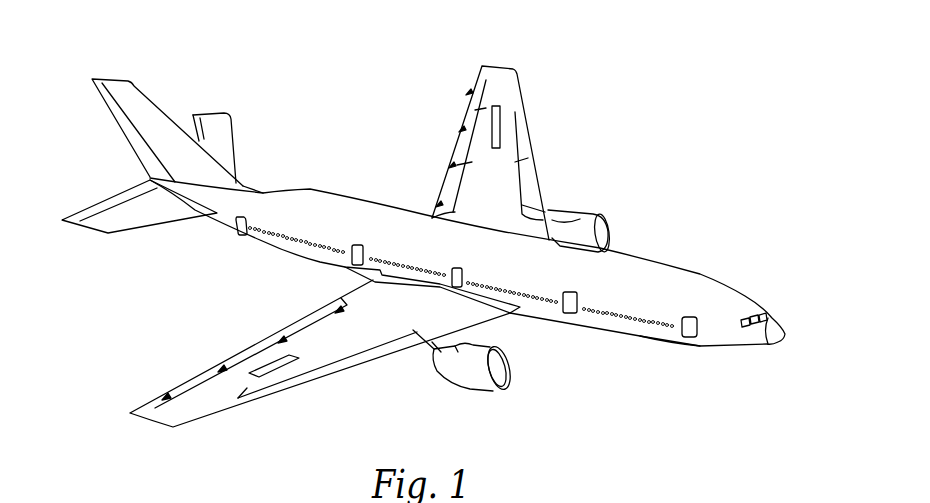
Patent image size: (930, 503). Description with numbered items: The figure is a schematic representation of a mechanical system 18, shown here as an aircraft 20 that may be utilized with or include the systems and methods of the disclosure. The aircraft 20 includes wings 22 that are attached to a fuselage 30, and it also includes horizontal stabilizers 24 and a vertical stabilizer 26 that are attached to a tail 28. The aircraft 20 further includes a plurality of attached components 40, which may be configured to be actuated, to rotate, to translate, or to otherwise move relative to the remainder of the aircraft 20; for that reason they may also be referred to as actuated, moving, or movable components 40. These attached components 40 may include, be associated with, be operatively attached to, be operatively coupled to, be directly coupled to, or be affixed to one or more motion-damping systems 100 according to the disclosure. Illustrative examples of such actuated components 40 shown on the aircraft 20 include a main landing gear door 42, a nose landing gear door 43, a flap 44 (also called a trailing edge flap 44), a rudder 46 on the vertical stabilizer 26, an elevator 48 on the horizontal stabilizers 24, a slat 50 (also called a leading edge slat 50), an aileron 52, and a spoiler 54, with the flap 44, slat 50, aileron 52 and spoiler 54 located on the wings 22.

The mechanical system 18 is at (720, 50).
The aircraft 20 is at (720, 108).
The wings 22 is at (507, 81).
The horizontal stabilizers 24 is at (233, 141).
The vertical stabilizer 26 is at (121, 85).
The tail 28 is at (108, 153).
The fuselage 30 is at (370, 193).
The attached components 40 is at (395, 80).
The main landing gear door 42 is at (532, 350).
The nose landing gear door 43 is at (663, 352).
The flap 44 is at (453, 188).
The rudder 46 is at (123, 122).
The elevator 48 is at (192, 128).
The slat 50 is at (537, 183).
The aileron 52 is at (479, 81).
The spoiler 54 is at (500, 108).
The motion-damping systems 100 is at (300, 172).